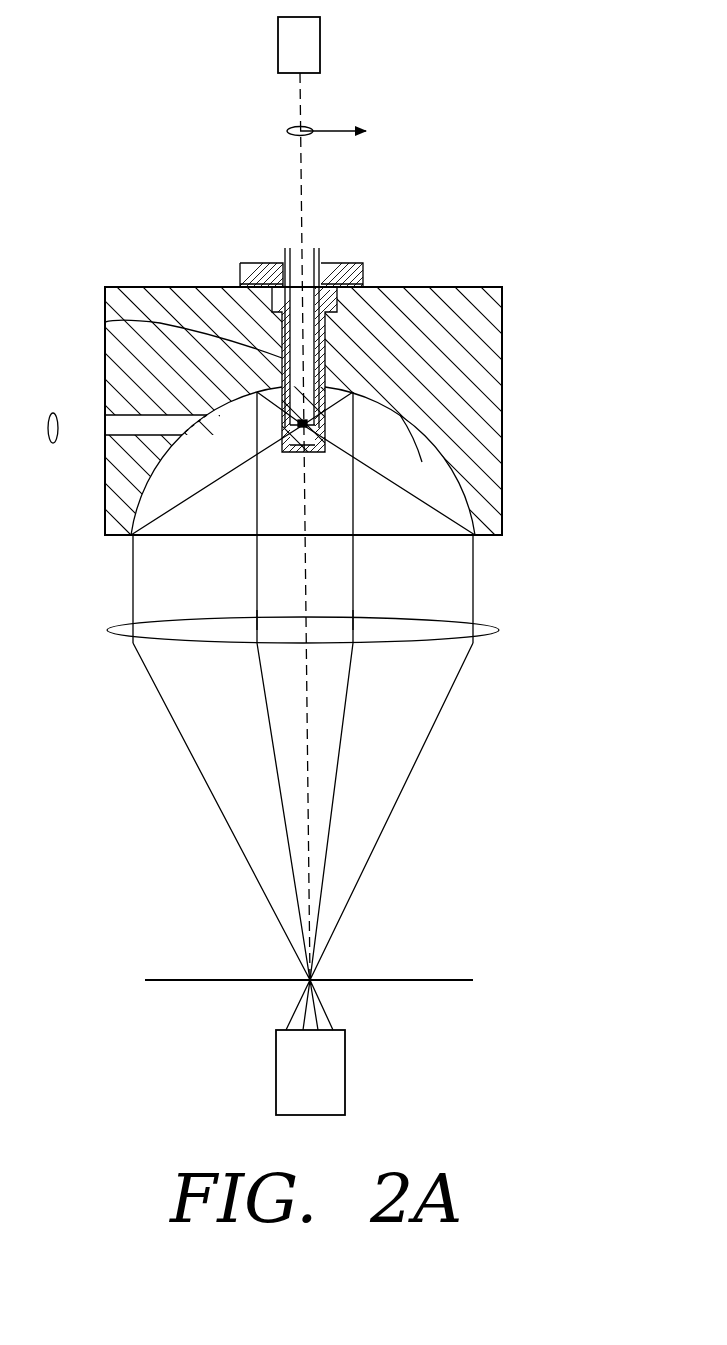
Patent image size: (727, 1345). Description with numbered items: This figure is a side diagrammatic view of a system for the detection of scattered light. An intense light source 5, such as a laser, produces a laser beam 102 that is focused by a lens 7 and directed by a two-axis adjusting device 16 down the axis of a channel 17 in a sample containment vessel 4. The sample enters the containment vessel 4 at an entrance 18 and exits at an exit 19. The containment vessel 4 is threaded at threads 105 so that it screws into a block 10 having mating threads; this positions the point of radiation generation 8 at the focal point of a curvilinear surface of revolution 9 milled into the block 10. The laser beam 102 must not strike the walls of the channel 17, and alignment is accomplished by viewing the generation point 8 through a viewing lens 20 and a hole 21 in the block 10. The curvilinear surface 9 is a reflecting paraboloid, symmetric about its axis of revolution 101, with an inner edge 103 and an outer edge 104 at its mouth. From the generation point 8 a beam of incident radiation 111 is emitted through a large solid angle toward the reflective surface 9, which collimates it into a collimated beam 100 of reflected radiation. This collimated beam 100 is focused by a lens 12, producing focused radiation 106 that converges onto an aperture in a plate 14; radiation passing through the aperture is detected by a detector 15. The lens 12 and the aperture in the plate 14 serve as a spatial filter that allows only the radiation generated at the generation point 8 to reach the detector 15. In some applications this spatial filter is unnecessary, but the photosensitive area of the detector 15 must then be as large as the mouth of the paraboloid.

The sample containment vessel 4 is at (377, 267).
The light source 5 is at (278, 50).
The lens 7 is at (292, 130).
The point of radiation generation 8 is at (313, 423).
The curvilinear surface of revolution 9 is at (462, 482).
The block 10 is at (516, 311).
The lens 12 is at (500, 636).
The plate 14 is at (192, 980).
The detector 15 is at (345, 1085).
The two-axis adjusting device 16 is at (356, 122).
The channel 17 is at (105, 322).
The sample entrance 18 is at (286, 256).
The sample exit 19 is at (318, 256).
The viewing lens 20 is at (48, 414).
The hole 21 is at (105, 422).
The collimated beam 100 is at (157, 579).
The axis of revolution 101 is at (303, 585).
The laser beam 102 is at (302, 170).
The inner edge of paraboloid mouth 103 is at (476, 540).
The outer edge of paraboloid mouth 104 is at (503, 534).
The threads 105 is at (272, 310).
The focused radiation 106 is at (411, 773).
The beam of incident radiation 111 is at (422, 462).